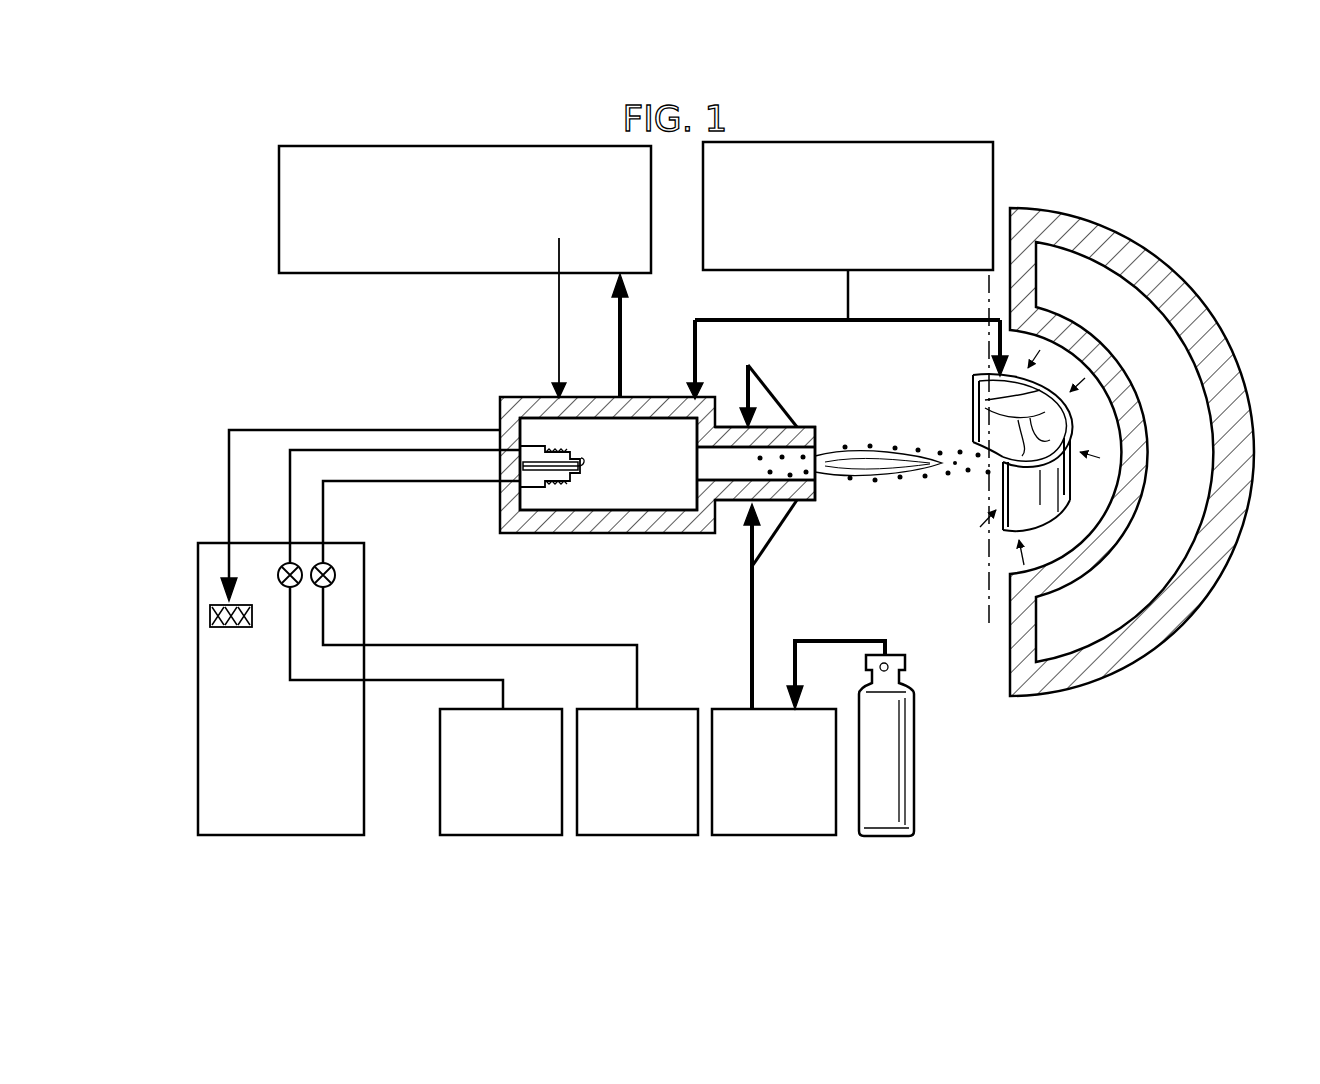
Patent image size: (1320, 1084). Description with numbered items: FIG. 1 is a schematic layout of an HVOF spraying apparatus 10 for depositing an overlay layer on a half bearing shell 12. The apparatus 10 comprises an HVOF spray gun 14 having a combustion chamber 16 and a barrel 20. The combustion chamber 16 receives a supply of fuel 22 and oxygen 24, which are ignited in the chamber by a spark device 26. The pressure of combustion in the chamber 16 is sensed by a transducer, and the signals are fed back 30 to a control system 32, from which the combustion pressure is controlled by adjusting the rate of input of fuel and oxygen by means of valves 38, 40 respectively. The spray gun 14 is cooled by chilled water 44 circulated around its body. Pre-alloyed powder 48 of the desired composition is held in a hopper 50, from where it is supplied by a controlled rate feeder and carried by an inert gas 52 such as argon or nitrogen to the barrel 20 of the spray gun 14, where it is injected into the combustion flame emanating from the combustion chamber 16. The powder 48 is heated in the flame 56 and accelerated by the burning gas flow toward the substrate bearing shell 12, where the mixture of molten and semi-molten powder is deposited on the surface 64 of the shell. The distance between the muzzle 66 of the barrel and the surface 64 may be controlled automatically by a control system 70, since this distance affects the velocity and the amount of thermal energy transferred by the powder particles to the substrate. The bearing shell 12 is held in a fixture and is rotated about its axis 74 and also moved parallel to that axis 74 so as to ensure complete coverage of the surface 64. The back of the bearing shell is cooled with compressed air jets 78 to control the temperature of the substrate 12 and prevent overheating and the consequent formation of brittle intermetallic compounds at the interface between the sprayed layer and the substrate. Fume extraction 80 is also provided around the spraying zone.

The apparatus layout 10 is at (1085, 173).
The half bearing shell 12 is at (987, 466).
The HVOF spray gun 14 is at (647, 531).
The combustion chamber 16 is at (619, 474).
The barrel 20 is at (805, 500).
The fuel 22 is at (512, 823).
The oxygen 24 is at (643, 823).
The spark device 26 is at (580, 462).
The feedback signals 30 is at (229, 466).
The control system 32 is at (266, 745).
The fuel valve 38 is at (286, 562).
The oxygen valve 40 is at (328, 562).
The chilled water 44 is at (373, 274).
The pre-alloyed powder 48 is at (778, 392).
The hopper 50 is at (775, 823).
The inert gas 52 is at (838, 641).
The flame 56 is at (818, 472).
The surface 64 is at (990, 385).
The muzzle 66 is at (816, 450).
The control system 70 is at (850, 160).
The axis 74 is at (989, 601).
The compressed air jets 78 is at (1090, 478).
The fume extraction 80 is at (1167, 302).